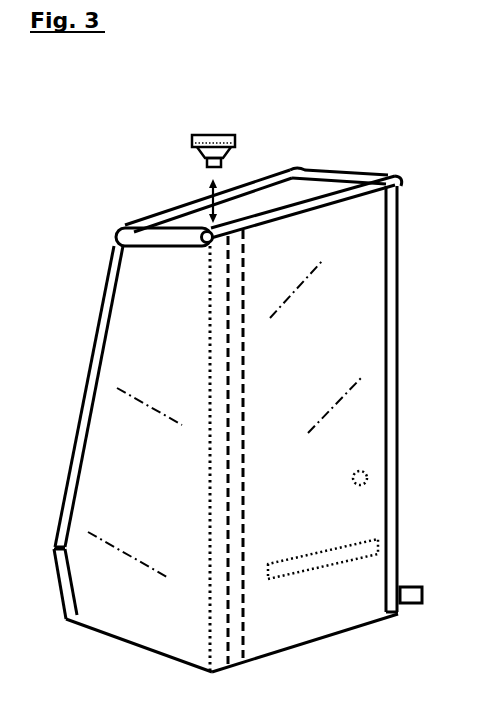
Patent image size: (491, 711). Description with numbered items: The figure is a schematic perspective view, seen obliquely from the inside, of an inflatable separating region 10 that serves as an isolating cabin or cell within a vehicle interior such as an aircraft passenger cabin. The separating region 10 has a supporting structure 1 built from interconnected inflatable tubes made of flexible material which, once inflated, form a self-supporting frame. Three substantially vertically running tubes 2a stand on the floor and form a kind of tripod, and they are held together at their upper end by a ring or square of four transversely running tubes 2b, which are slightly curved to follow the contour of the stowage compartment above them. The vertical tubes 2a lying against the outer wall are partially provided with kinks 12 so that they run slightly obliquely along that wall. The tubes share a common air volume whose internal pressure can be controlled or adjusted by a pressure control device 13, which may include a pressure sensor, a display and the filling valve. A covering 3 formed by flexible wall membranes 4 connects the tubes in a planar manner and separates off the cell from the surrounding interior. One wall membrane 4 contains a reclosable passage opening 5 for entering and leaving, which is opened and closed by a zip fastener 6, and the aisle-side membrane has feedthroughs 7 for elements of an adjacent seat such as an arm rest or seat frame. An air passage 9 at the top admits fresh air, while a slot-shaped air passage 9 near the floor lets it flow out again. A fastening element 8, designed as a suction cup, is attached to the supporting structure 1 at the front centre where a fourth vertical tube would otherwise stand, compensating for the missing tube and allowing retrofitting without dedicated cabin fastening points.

The supporting structure 1 is at (50, 503).
The vertically running tube 2a is at (100, 322).
The transversely running tube 2b is at (156, 216).
The covering 3 is at (372, 257).
The wall membrane 4 is at (320, 332).
The passage opening 5 is at (248, 618).
The zip fastener 6 is at (233, 648).
The feedthrough 7 is at (380, 485).
The fastening element 8 is at (203, 135).
The air passage 9 is at (275, 192).
The separating region 10 is at (86, 142).
The kink 12 is at (56, 547).
The pressure control device 13 is at (412, 604).